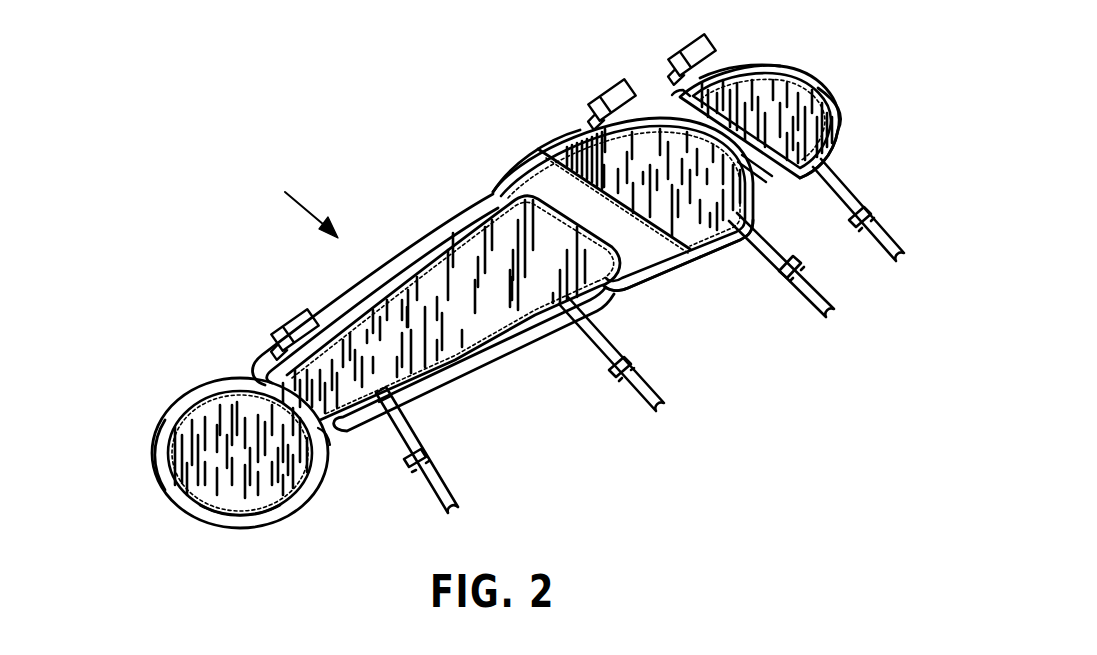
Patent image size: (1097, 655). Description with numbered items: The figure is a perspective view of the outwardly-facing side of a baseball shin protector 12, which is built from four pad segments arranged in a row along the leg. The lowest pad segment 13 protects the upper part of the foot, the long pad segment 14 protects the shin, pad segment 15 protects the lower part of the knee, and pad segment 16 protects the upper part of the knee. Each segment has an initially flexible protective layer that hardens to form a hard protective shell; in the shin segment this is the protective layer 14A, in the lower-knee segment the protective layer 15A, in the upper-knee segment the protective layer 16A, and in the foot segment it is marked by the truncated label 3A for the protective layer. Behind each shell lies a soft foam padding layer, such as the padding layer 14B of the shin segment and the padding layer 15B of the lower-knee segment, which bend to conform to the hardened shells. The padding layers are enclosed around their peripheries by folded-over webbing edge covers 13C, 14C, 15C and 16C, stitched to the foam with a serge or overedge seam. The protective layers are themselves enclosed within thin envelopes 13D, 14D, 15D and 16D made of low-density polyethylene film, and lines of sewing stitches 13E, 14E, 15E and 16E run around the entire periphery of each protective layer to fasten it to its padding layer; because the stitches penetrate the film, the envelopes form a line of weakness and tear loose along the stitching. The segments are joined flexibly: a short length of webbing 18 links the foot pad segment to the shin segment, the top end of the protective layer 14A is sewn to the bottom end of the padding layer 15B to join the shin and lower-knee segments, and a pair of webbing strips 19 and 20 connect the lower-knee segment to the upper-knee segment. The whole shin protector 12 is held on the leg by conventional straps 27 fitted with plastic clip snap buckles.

The shin protector 12 is at (298, 204).
The pad segment 13 is at (157, 487).
The webbing edge cover 13C is at (165, 440).
The film envelope 13D is at (225, 418).
The sewing stitches 13E is at (277, 483).
The ring inner edge 3A is at (233, 497).
The short length of webbing 18 is at (323, 433).
The pad segment 14 is at (547, 343).
The protective layer 14A is at (503, 345).
The padding layer 14B is at (427, 380).
The webbing edge cover 14C is at (330, 303).
The film envelope 14D is at (437, 287).
The sewing stitches 14E is at (520, 347).
The straps 27 is at (398, 450).
The pad segment 15 is at (667, 267).
The protective layer 15A is at (697, 250).
The padding layer 15B is at (560, 187).
The webbing edge cover 15C is at (505, 182).
The film envelope 15D is at (710, 237).
The sewing stitches 15E is at (760, 200).
The webbing strip 20 is at (753, 163).
The pad segment 16 is at (765, 70).
The protective layer 16A is at (837, 117).
The webbing edge cover 16C is at (737, 70).
The film envelope 16D is at (812, 90).
The sewing stitches 16E is at (830, 95).
The webbing strip 19 is at (683, 93).